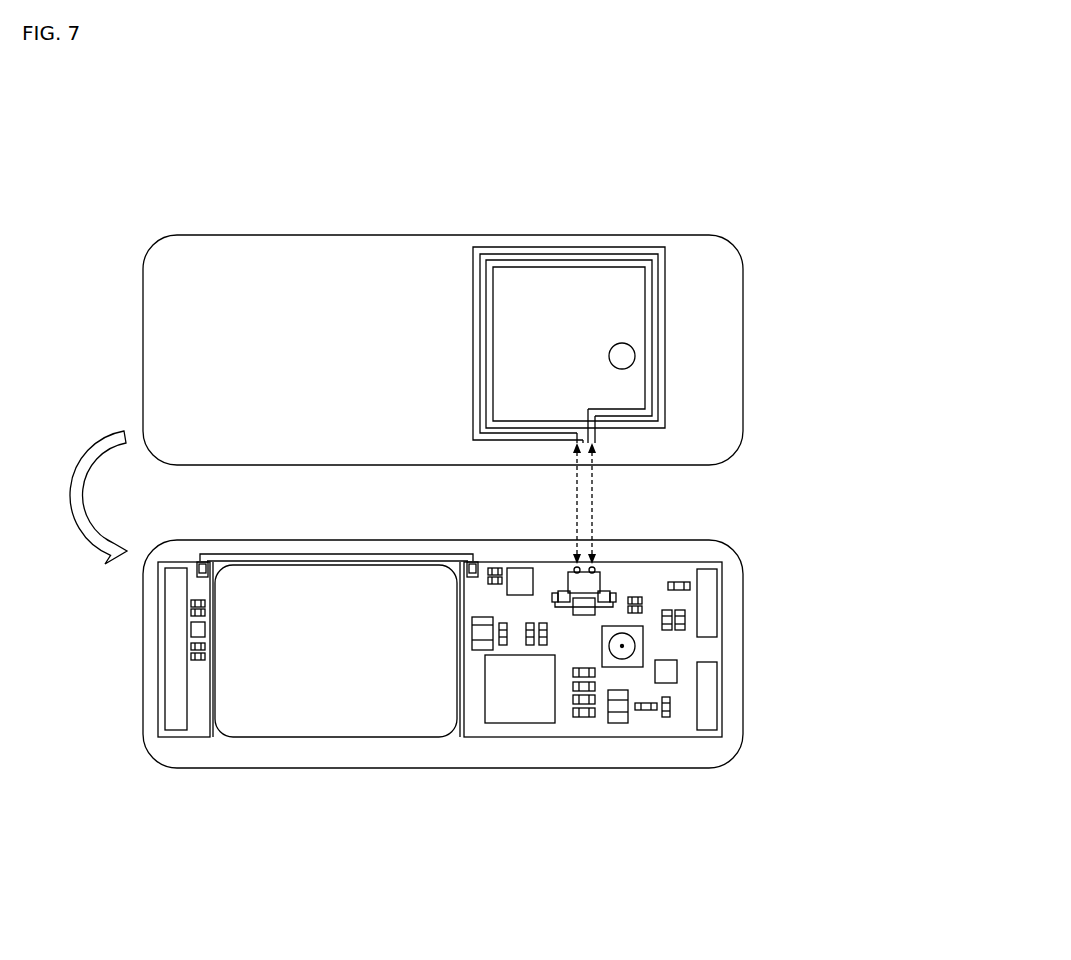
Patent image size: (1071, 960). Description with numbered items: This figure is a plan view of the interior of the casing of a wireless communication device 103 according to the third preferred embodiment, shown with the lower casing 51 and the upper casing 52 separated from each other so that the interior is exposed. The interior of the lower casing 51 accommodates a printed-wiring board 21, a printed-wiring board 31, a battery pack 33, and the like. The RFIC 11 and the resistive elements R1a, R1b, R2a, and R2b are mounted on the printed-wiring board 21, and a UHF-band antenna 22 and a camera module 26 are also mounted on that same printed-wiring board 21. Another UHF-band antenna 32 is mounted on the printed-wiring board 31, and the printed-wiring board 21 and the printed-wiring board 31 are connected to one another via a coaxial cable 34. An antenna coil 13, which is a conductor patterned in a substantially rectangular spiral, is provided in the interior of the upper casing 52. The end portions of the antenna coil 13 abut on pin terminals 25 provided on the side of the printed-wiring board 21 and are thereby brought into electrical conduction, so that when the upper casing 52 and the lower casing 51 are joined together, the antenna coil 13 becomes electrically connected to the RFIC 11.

The wireless communication device 103 is at (781, 156).
The upper casing 52 is at (730, 240).
The antenna coil 13 is at (665, 333).
The lower casing 51 is at (732, 548).
The printed-wiring board 31 is at (180, 727).
The UHF-band antenna 32 is at (165, 645).
The battery pack 33 is at (340, 727).
The coaxial cable 34 is at (358, 553).
The printed-wiring board 21 is at (567, 727).
The RFIC 11 is at (585, 612).
The pin terminals 25 is at (593, 567).
The camera module 26 is at (640, 645).
The UHF-band antenna 22 is at (713, 609).
The resistive element R1a is at (563, 591).
The resistive element R1b is at (614, 596).
The resistive element R2a is at (552, 595).
The resistive element R2b is at (604, 591).